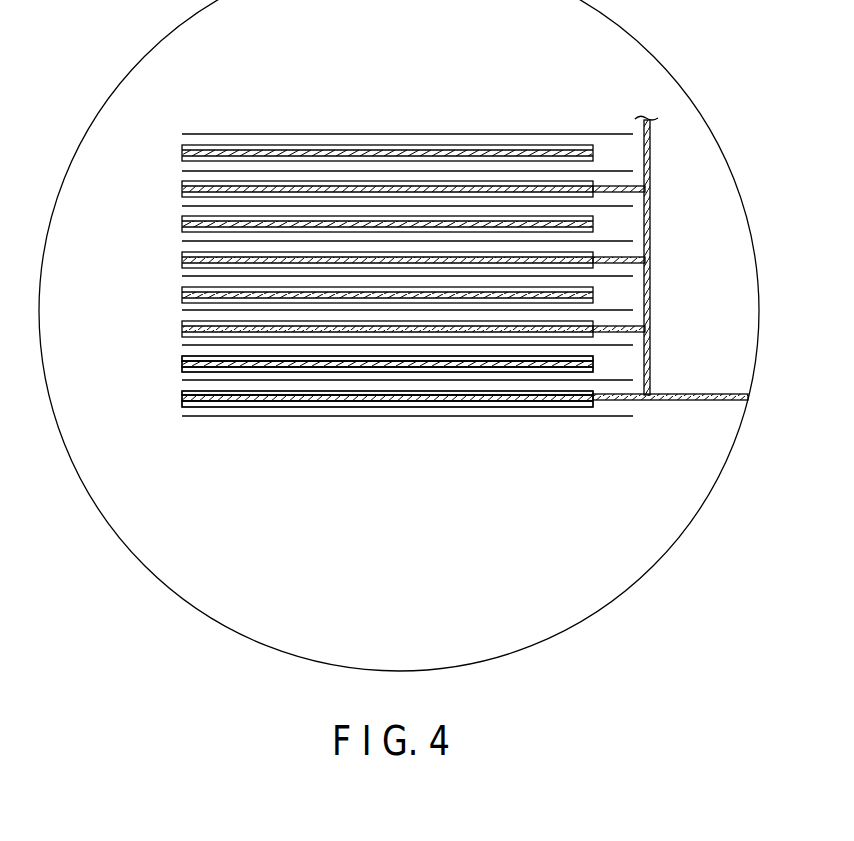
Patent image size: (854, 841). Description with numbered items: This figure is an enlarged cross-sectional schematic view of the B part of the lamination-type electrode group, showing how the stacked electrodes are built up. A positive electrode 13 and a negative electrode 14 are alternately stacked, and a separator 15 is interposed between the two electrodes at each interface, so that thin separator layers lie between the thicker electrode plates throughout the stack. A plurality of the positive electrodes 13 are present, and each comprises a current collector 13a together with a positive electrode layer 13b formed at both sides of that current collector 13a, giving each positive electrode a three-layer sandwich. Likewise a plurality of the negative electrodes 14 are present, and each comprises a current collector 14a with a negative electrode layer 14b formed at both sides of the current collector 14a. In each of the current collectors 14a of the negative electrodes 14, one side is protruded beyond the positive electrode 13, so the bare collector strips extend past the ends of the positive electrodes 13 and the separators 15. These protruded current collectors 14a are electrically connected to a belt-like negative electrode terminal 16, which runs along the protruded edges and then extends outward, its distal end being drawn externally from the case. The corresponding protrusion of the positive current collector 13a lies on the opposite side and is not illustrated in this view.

The positive electrode 13 is at (178, 153).
The current collector 13a is at (190, 363).
The positive electrode layer 13b is at (183, 358).
The negative electrode 14 is at (178, 189).
The current collector 14a is at (622, 186).
The negative electrode layer 14b is at (185, 394).
The separator 15 is at (464, 133).
The negative electrode terminal 16 is at (696, 401).
The B part B is at (648, 572).